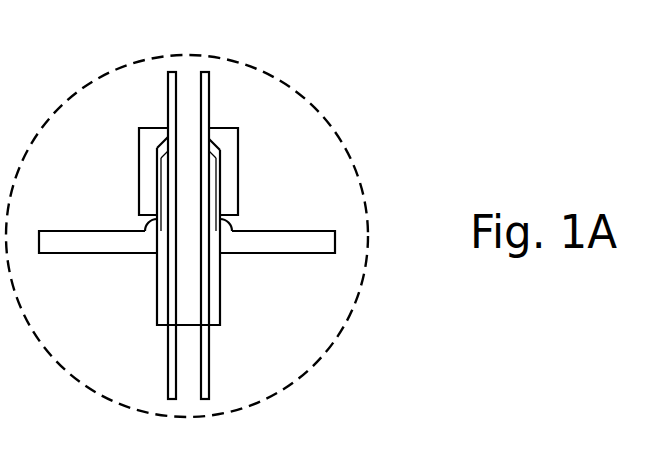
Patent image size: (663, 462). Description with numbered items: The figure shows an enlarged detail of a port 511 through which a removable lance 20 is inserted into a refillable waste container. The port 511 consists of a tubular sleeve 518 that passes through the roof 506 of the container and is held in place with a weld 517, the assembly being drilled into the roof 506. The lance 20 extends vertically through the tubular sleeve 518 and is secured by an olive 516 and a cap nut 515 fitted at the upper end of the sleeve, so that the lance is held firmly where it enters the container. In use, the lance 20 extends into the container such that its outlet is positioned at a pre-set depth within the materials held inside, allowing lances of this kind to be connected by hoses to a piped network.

The lance 20 is at (208, 368).
The roof 506 is at (207, 237).
The port 511 is at (187, 221).
The cap nut 515 is at (227, 133).
The olive 516 is at (220, 147).
The weld 517 is at (225, 222).
The tubular sleeve 518 is at (220, 277).